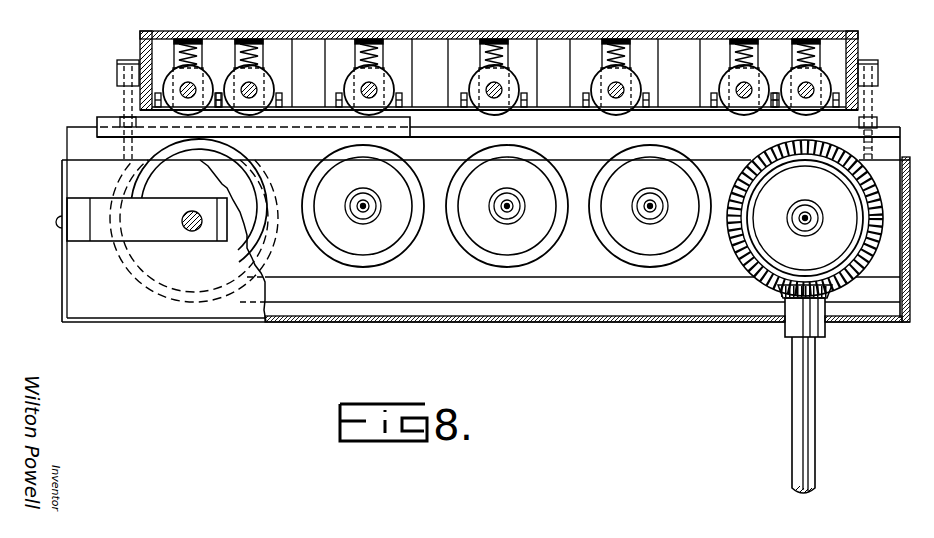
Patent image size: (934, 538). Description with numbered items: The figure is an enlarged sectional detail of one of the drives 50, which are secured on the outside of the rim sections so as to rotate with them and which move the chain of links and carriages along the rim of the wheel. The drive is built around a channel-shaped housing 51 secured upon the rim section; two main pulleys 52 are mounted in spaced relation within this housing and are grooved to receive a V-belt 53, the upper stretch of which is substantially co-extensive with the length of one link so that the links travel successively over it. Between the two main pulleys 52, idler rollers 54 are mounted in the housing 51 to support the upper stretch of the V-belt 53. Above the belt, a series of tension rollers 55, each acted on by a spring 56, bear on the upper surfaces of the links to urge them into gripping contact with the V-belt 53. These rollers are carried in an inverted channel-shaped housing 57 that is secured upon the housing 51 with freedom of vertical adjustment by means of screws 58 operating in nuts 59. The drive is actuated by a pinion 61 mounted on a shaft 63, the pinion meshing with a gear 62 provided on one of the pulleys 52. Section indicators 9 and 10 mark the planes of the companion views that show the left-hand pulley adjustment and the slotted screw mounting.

The section line 9- 9 is at (50, 120).
The section line 10- 10 is at (503, 180).
The drive 50 is at (307, 341).
The channel-shaped housing 51 is at (550, 259).
The main pulley 52 is at (154, 268).
The V-belt 53 is at (343, 206).
The idler roller 54 is at (578, 210).
The tension roller 55 is at (633, 76).
The spring 56 is at (613, 39).
The inverted channel-shaped housing 57 is at (499, 58).
The screw 58 is at (874, 107).
The nut 59 is at (876, 119).
The pinion 61 is at (782, 289).
The gear 62 is at (733, 250).
The shaft 63 is at (781, 415).